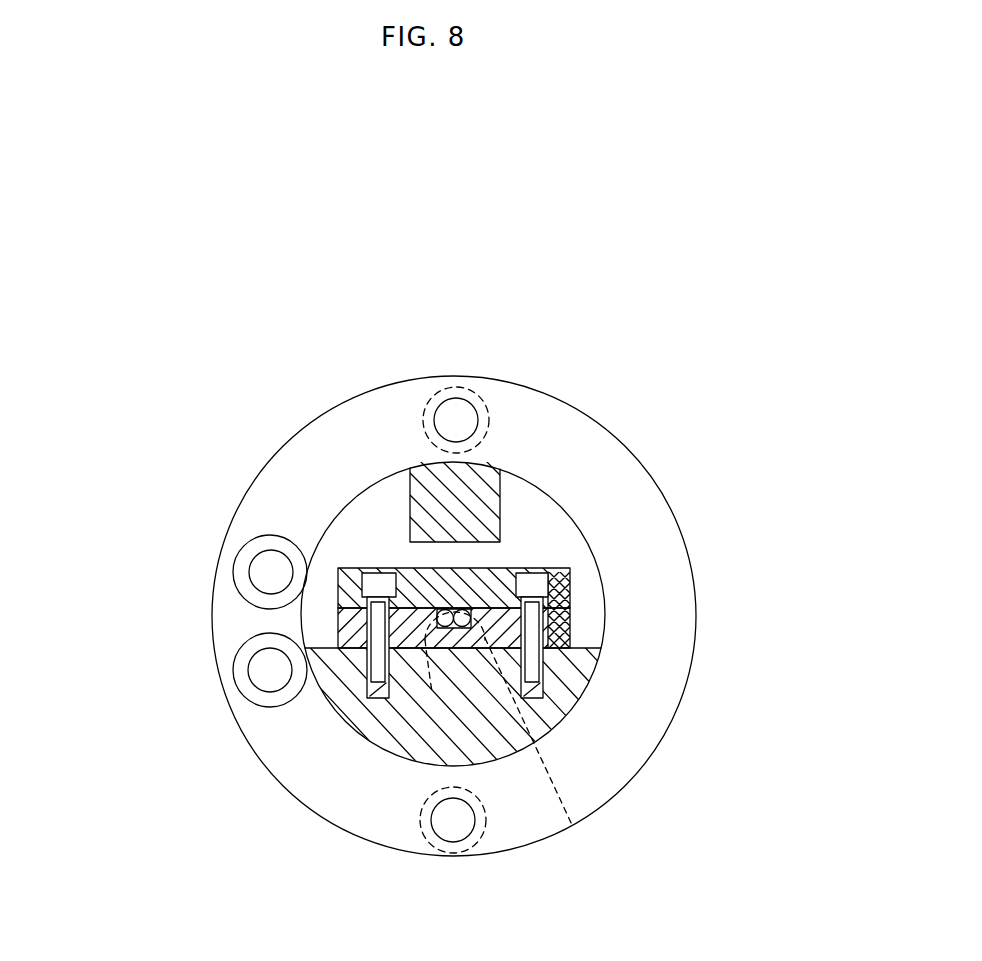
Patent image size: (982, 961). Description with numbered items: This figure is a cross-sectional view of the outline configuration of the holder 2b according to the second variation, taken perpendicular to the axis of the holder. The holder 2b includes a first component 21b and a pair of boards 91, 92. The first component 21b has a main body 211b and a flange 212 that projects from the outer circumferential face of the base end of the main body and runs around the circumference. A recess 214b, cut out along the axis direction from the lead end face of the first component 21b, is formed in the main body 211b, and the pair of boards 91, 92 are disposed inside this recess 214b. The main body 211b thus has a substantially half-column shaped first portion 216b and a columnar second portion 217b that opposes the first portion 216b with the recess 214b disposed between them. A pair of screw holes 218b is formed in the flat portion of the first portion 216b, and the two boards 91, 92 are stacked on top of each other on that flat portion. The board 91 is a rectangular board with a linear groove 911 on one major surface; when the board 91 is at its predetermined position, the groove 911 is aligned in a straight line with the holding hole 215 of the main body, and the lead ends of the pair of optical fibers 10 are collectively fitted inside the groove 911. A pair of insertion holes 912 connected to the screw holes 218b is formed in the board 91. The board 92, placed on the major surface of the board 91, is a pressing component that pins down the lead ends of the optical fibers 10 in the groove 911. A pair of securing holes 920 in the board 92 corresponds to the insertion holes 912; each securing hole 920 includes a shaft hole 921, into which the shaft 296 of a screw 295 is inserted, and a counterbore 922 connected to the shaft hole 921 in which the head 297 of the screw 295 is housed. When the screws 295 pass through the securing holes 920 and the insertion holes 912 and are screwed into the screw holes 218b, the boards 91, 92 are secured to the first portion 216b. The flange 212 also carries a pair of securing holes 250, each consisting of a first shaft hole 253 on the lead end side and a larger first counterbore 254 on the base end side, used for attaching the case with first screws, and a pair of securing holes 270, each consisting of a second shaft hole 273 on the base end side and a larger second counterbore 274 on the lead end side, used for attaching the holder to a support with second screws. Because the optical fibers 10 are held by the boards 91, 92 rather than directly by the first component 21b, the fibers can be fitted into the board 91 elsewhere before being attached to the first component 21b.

The holder 2b is at (157, 375).
The optical fibers 10 is at (408, 568).
The first component 21b is at (618, 800).
The main body 211b is at (372, 692).
The flange 212 is at (633, 686).
The recess 214b is at (450, 549).
The holding hole 215 is at (573, 827).
The first portion 216b is at (398, 737).
The second portion 217b is at (437, 478).
The screw holes 218b is at (333, 718).
The securing holes 250 is at (548, 638).
The first shaft hole 253 is at (450, 822).
The first counterbore 254 is at (465, 852).
The securing holes 270 is at (395, 575).
The second shaft hole 273 is at (250, 671).
The second counterbore 274 is at (240, 684).
The screws 295 is at (486, 577).
The shaft 296 is at (570, 605).
The head 297 is at (562, 592).
The securing holes 920 is at (697, 450).
The shaft hole 921 is at (340, 570).
The counterbore 922 is at (263, 553).
The board 91 is at (572, 630).
The groove 911 is at (397, 738).
The insertion holes 912 is at (340, 630).
The board 92 is at (572, 594).